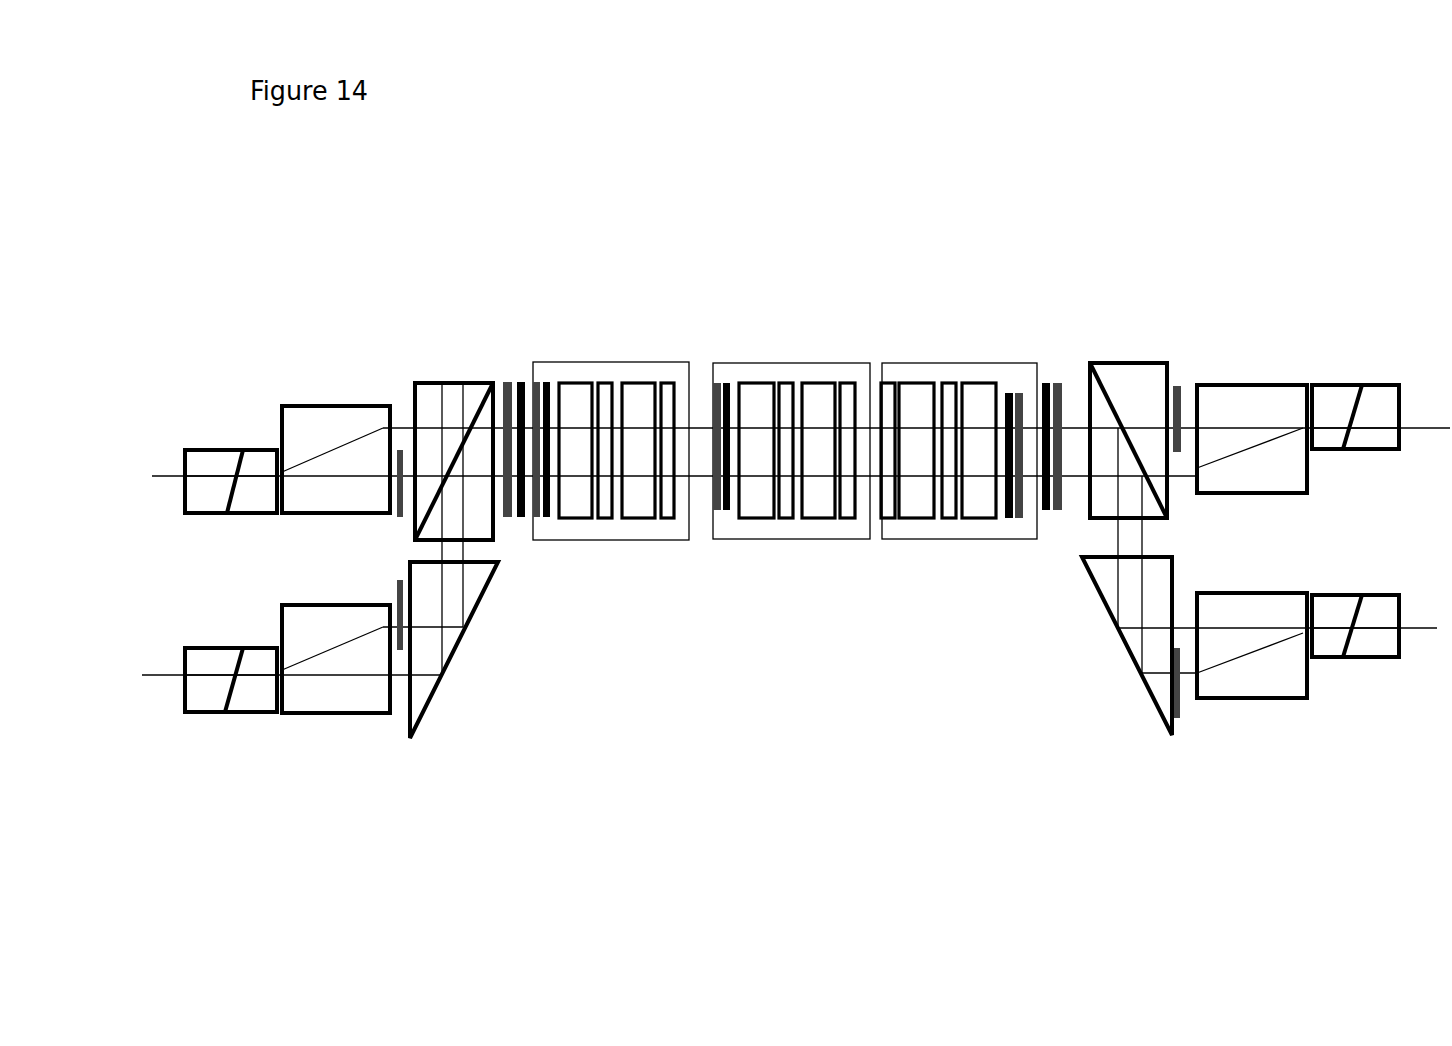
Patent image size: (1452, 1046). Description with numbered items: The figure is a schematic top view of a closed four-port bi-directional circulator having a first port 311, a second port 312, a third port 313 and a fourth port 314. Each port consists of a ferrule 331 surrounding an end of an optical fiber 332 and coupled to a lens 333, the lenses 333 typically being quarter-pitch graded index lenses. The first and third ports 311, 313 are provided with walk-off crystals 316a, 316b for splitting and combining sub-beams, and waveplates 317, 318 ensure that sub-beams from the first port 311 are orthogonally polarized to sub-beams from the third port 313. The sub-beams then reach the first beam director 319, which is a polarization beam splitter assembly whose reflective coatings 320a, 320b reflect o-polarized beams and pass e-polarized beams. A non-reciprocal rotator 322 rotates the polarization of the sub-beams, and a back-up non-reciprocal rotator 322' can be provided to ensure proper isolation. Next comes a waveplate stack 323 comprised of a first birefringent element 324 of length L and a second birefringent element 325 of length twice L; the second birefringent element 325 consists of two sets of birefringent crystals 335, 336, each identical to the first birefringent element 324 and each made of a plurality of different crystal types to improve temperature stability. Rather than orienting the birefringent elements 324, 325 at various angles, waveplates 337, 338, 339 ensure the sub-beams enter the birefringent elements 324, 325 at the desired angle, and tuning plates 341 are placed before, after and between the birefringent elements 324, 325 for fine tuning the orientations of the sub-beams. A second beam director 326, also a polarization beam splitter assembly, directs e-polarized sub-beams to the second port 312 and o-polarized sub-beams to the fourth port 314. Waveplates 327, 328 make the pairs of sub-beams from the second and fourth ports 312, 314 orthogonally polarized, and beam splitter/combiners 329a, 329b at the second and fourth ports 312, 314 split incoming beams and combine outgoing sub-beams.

The first port 311 is at (248, 378).
The second port 312 is at (1330, 343).
The third port 313 is at (235, 738).
The fourth port 314 is at (1342, 717).
The walk-off crystal 316a is at (333, 428).
The walk-off crystal 316b is at (355, 690).
The waveplate 317 is at (395, 513).
The waveplate 318 is at (395, 593).
The first beam director 319 is at (452, 353).
The reflective coating 320a is at (473, 412).
The reflective coating 320b is at (478, 605).
The non-reciprocal rotator 322 is at (536, 395).
The back-up non-reciprocal rotator 322' is at (1034, 385).
The waveplate stack 323 is at (789, 443).
The first birefringent element 324 is at (633, 365).
The second birefringent element 325 is at (762, 548).
The second beam director 326 is at (1115, 330).
The waveplate 327 is at (1177, 386).
The waveplate 328 is at (1168, 725).
The beam splitter/combiner 329a is at (1222, 402).
The beam splitter/combiner 329b is at (1257, 680).
The ferrule 331 is at (198, 667).
The optical fiber 332 is at (173, 477).
The lens 333 is at (260, 463).
The set of birefringent crystals 335 is at (837, 540).
The set of birefringent crystals 336 is at (972, 522).
The waveplate 337 is at (535, 507).
The waveplate 338 is at (722, 385).
The waveplate 339 is at (1002, 385).
The tuning plate 341 is at (548, 498).